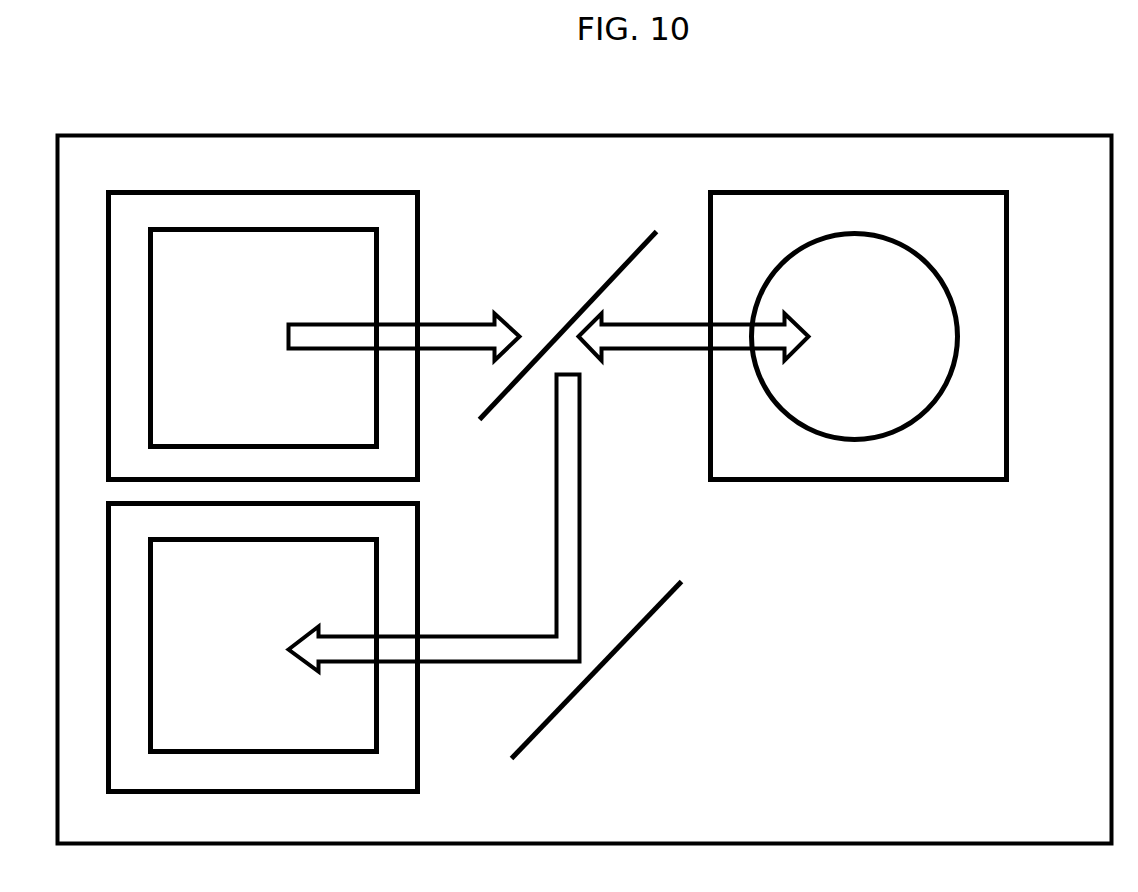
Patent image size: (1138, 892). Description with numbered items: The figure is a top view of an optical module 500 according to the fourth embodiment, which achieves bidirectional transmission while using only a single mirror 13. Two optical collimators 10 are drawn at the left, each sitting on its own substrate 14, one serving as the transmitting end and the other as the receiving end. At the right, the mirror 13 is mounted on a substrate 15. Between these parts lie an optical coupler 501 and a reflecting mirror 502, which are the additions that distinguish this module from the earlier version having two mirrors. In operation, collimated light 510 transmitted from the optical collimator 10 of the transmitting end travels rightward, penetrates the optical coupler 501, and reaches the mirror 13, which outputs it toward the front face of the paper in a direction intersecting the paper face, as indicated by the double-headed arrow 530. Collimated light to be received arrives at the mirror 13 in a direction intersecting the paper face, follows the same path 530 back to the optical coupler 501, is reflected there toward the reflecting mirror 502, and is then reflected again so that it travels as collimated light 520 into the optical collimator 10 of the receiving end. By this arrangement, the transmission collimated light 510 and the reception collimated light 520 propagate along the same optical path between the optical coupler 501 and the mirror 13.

The optical module 500 is at (707, 132).
The substrate 14 is at (418, 222).
The optical collimator 10 is at (183, 443).
The substrate 15 is at (953, 483).
The mirror 13 is at (902, 242).
The optical coupler 501 is at (633, 250).
The reflecting mirror 502 is at (667, 597).
The collimated light (transmission) 510 is at (435, 323).
The collimated light (reception) 520 is at (448, 633).
The collimated light (bidirectional at mirror) 530 is at (625, 350).